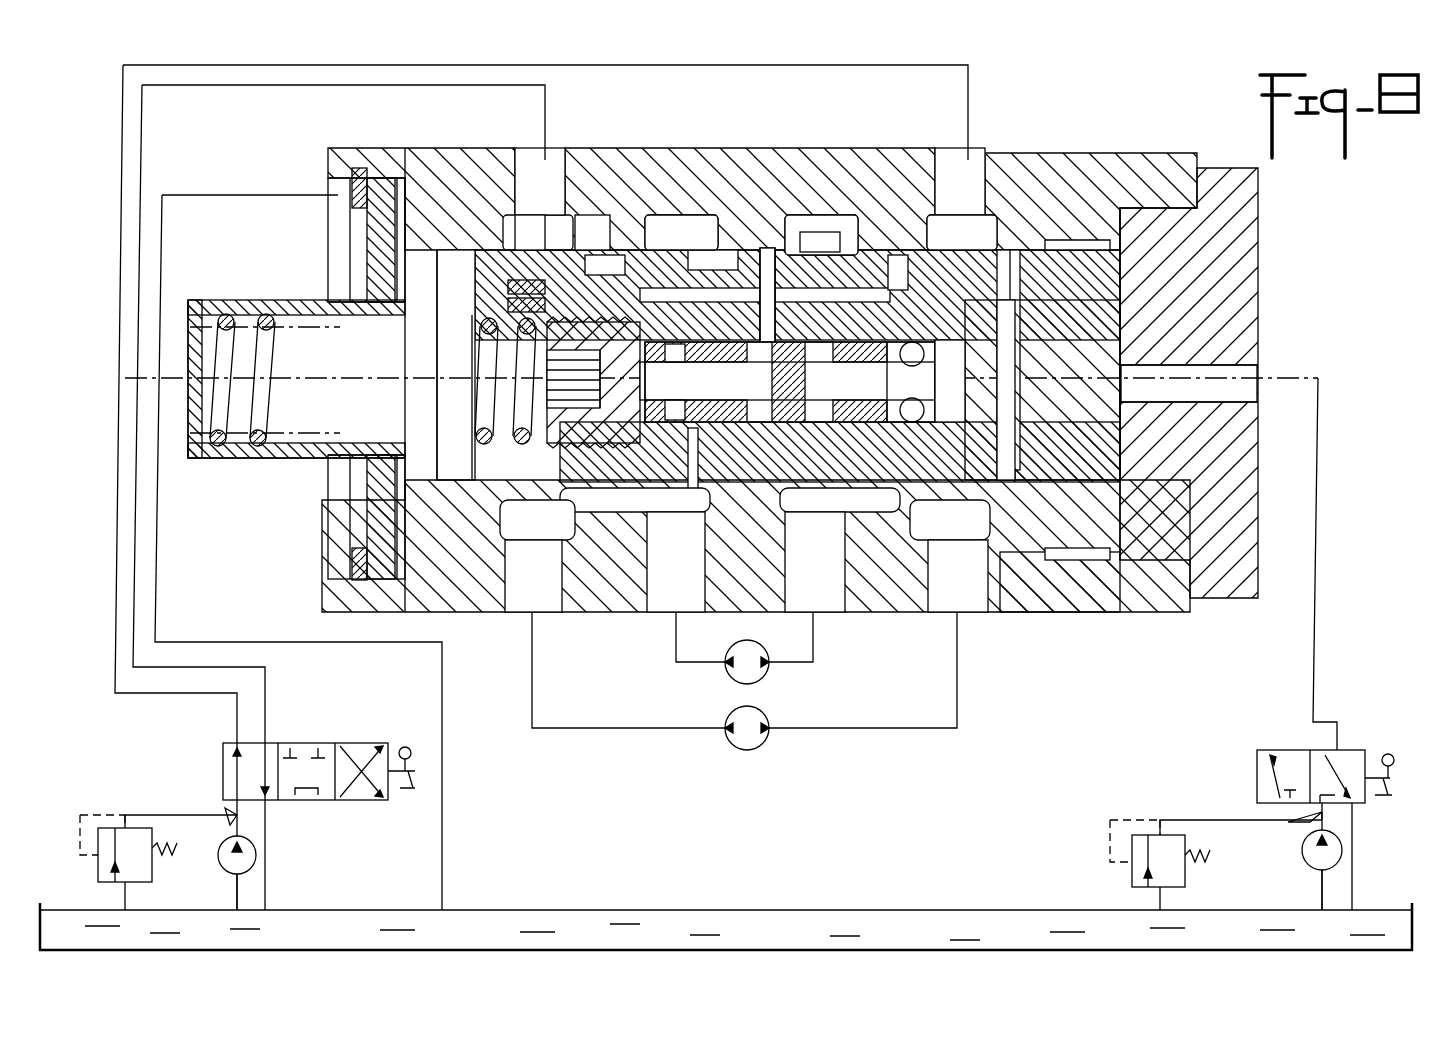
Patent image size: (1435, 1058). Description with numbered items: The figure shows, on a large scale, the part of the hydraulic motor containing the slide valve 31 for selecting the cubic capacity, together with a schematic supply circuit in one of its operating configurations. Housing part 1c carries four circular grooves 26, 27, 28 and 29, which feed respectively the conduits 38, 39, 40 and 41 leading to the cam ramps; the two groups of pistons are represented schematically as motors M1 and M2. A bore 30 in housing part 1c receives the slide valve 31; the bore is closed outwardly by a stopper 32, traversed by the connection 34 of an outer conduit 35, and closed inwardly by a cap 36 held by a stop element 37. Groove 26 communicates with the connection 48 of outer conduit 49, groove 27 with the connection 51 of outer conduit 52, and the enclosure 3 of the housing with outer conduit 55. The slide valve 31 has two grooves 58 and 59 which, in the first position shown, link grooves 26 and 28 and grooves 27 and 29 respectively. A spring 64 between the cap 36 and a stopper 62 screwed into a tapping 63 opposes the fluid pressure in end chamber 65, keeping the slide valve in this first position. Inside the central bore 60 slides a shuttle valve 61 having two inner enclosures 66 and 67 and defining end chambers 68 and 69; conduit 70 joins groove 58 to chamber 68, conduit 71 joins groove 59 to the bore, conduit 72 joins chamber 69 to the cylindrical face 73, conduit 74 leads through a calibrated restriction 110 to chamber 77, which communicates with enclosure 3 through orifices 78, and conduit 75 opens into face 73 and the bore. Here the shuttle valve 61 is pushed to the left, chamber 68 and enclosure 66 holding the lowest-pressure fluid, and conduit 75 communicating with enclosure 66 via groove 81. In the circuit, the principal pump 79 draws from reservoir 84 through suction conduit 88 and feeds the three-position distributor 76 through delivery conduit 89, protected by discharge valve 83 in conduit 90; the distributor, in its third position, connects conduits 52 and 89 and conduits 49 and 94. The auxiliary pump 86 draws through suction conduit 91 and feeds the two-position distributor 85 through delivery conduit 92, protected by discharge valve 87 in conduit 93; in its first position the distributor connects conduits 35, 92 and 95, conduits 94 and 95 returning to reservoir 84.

The housing part 1c is at (1157, 153).
The enclosure 3 is at (328, 282).
The circular groove 26 is at (568, 235).
The circular groove 27 is at (990, 230).
The circular groove 28 is at (700, 215).
The circular groove 29 is at (845, 215).
The bore 30 is at (1020, 512).
The slide valve for selecting the cubic capacity 31 is at (1093, 340).
The stopper 32 is at (1258, 290).
The connection 34 is at (1255, 378).
The outer conduit 35 is at (1316, 525).
The cap 36 is at (250, 458).
The stop element 37 is at (352, 560).
The conduits 38 is at (515, 612).
The conduits 39 is at (975, 612).
The conduits 40 is at (662, 612).
The conduits 41 is at (830, 612).
The connection 48 is at (548, 160).
The outer conduit 49 is at (140, 145).
The connection 51 is at (975, 160).
The outer conduit 52 is at (120, 150).
The outer conduit 55 is at (183, 195).
The groove 58 is at (580, 262).
The groove 59 is at (815, 268).
The central bore 60 is at (925, 350).
The shuttle valve 61 is at (905, 335).
The stopper 62 is at (590, 440).
The tapping 63 is at (540, 440).
The spring 64 is at (220, 300).
The end chamber 65 is at (1080, 548).
The inner enclosure 66 is at (790, 428).
The inner enclosure 67 is at (905, 422).
The end chamber 68 is at (652, 435).
The end chamber 69 is at (970, 420).
The conduit 70 is at (690, 483).
The conduit 71 is at (845, 486).
The conduit 72 is at (1012, 320).
The cylindrical face 73 is at (1080, 240).
The conduit 74 is at (915, 268).
The conduit 75 is at (770, 265).
The three-position distributor 76 is at (220, 752).
The chamber 77 is at (293, 458).
The orifices 78 is at (372, 275).
The principal pump 79 is at (250, 845).
The groove 81 is at (662, 490).
The calibrated discharge valve 83 is at (98, 840).
The fluid reservoir 84 is at (1412, 910).
The two-position distributor for selecting the cubic capacity 85 is at (1250, 748).
The auxiliary pump 86 is at (1310, 850).
The calibrated discharge valve 87 is at (1132, 845).
The suction conduit 88 is at (237, 882).
The delivery conduit 89 is at (228, 818).
The conduit 90 is at (125, 898).
The suction conduit 91 is at (1318, 888).
The delivery conduit 92 is at (1305, 822).
The conduit 93 is at (1160, 900).
The conduit 94 is at (265, 895).
The conduit 95 is at (1352, 895).
The calibrated restriction 110 is at (508, 292).
The motor M1 is at (767, 738).
The motor M2 is at (767, 673).